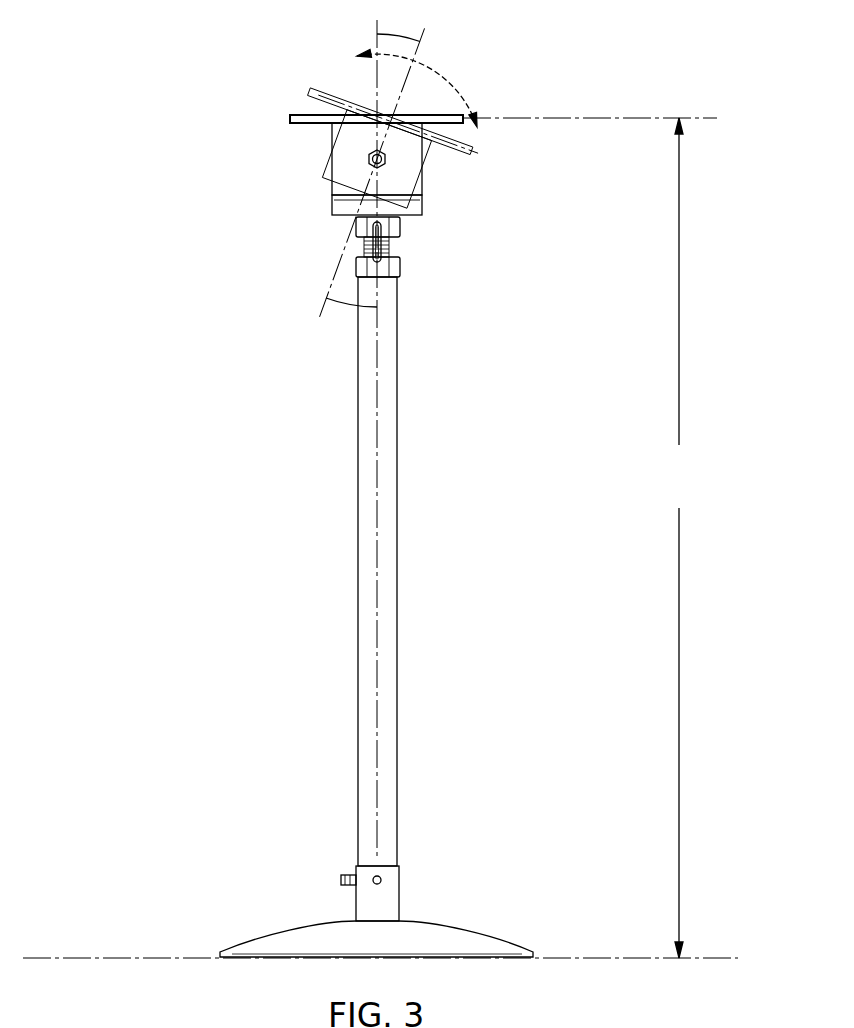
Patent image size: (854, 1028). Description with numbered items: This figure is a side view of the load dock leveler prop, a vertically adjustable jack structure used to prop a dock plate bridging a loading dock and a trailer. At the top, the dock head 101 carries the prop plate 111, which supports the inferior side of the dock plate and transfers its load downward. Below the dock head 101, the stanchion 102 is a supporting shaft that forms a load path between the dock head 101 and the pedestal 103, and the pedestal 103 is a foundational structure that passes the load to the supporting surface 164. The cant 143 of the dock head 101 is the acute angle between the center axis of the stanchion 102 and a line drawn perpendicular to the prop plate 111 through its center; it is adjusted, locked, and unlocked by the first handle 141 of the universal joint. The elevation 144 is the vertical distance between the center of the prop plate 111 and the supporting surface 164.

The dock head 101 is at (447, 108).
The prop plate 111 is at (290, 113).
The first handle 141 is at (385, 238).
The cant 143 is at (398, 33).
The elevation 144 is at (677, 538).
The stanchion 102 is at (381, 818).
The pedestal 103 is at (474, 930).
The supporting surface 164 is at (648, 960).